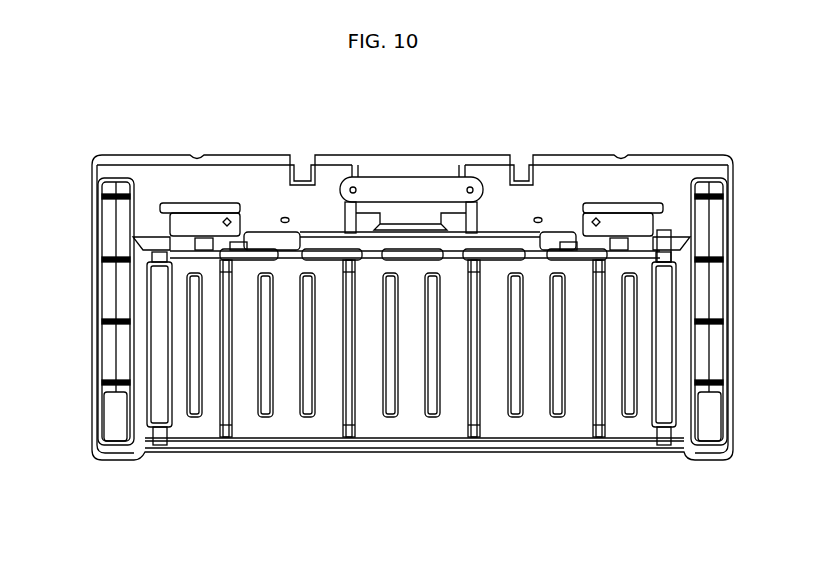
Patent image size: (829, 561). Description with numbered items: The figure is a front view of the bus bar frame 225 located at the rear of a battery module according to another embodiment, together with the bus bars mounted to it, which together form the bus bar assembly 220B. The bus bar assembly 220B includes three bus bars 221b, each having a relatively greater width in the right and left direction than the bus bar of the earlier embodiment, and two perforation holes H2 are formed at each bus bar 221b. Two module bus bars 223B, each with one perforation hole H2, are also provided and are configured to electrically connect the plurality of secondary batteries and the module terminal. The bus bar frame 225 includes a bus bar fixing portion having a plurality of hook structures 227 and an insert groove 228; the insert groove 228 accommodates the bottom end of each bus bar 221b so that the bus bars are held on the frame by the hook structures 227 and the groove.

The bus bar assembly 220B is at (84, 146).
The bus bar frame 225 is at (118, 178).
The module bus bar 223B is at (168, 225).
The hook structure 227 is at (497, 250).
The bus bar 221b is at (270, 425).
The perforation hole H2 is at (264, 400).
The insert groove 228 is at (448, 440).